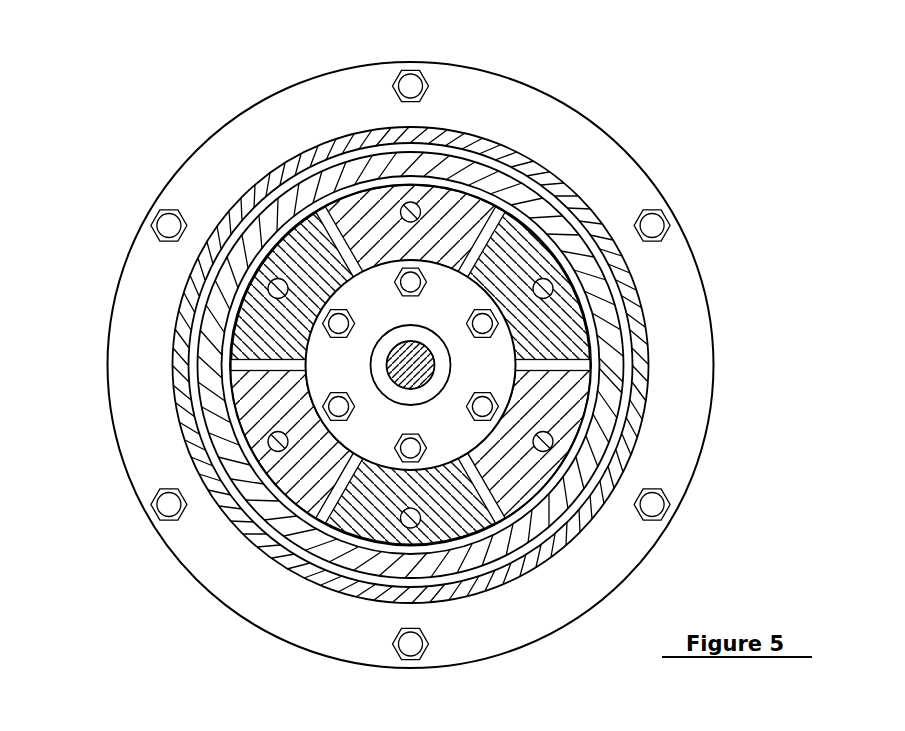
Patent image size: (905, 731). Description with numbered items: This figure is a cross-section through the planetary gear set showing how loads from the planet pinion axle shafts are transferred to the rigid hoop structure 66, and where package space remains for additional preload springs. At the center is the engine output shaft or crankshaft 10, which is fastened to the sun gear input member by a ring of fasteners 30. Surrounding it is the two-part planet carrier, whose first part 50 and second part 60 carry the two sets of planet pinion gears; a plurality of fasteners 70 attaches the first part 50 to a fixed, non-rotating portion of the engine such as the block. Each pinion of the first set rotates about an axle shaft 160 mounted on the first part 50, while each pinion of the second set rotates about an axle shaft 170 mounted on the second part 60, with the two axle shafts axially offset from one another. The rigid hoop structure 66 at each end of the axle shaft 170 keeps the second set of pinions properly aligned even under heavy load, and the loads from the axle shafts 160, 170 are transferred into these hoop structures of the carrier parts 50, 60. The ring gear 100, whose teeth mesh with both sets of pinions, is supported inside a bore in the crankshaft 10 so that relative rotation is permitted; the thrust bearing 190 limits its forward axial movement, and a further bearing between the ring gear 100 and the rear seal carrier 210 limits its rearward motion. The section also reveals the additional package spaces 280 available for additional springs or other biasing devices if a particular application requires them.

The crankshaft 10 is at (430, 318).
The fasteners 30 is at (408, 293).
The first part of planet carrier 50 is at (465, 216).
The second part of planet carrier 60 is at (542, 245).
The rigid hoop structure 66 is at (437, 245).
The fasteners 70 is at (411, 68).
The ring gear 100 is at (273, 368).
The axle shaft 160 is at (407, 201).
The axle shaft 170 is at (268, 289).
The thrust bearing 190 is at (247, 408).
The rear seal carrier 210 is at (314, 156).
The package spaces 280 is at (517, 238).